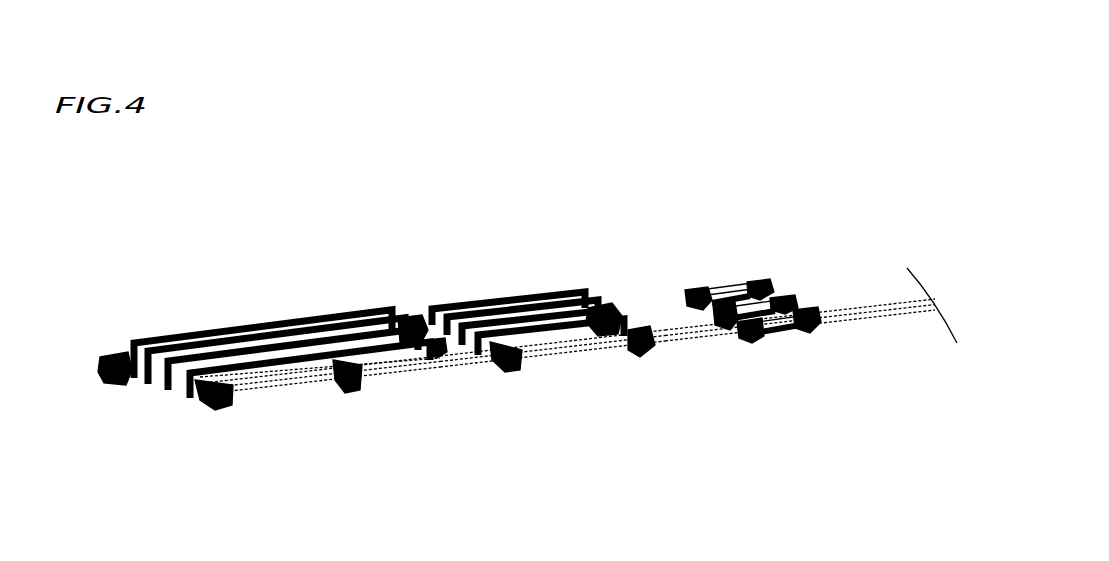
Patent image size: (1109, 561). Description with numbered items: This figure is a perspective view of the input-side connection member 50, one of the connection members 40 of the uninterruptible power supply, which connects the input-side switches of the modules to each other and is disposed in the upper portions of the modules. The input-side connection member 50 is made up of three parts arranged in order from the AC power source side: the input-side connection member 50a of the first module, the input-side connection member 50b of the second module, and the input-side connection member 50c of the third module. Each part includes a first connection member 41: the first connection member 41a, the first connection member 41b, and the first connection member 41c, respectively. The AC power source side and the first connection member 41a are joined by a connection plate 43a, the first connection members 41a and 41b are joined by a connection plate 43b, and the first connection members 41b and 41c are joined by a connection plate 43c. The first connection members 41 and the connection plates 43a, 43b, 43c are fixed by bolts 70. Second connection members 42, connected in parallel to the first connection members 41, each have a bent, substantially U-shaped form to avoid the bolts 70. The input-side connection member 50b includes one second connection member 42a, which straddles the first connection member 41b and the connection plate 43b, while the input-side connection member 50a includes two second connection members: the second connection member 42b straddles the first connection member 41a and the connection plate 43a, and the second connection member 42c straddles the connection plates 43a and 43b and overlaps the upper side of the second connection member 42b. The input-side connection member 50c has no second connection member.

The connection members 40 is at (183, 227).
The input-side connection member 50 is at (514, 321).
The input-side connection member 50a is at (241, 307).
The input-side connection member 50b is at (514, 233).
The input-side connection member 50c is at (835, 267).
The first connection member 41 is at (578, 371).
The first connection member 41a is at (298, 395).
The first connection member 41b is at (573, 355).
The first connection member 41c is at (846, 327).
The second connection member 42 is at (362, 350).
The second connection member 42a is at (528, 333).
The second connection member 42b is at (268, 377).
The second connection member 42c is at (263, 344).
The connection plate 43a is at (186, 405).
The connection plate 43b is at (490, 368).
The connection plate 43c is at (772, 332).
The bolt 70 is at (116, 353).